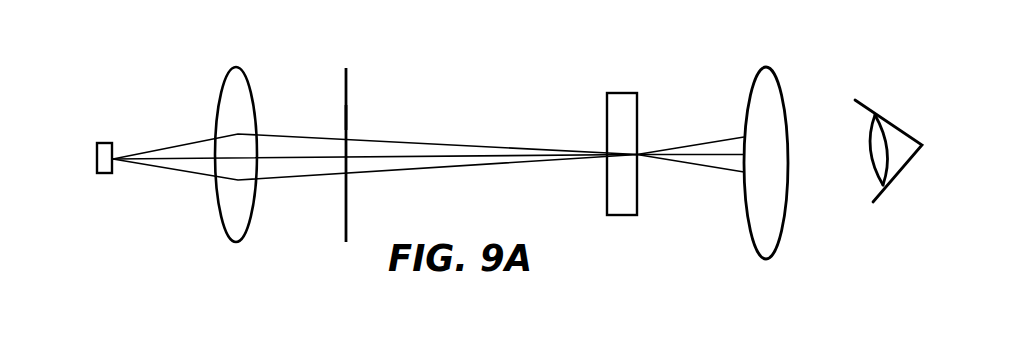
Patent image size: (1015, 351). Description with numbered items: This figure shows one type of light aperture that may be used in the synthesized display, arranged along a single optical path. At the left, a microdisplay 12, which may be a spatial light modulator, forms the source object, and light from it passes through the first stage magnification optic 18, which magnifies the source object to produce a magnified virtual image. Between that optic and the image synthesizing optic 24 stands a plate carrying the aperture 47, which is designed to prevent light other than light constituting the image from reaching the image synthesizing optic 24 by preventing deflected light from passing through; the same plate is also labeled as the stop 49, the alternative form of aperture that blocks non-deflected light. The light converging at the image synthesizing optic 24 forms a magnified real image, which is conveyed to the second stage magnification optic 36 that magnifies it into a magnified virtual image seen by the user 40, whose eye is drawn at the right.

The microdisplay 12 is at (87, 136).
The first stage magnification optic 18 is at (250, 136).
The stop 49 is at (377, 138).
The aperture 47 is at (386, 109).
The image synthesizing optic 24 is at (604, 129).
The second stage magnification optic 36 is at (745, 146).
The user 40 is at (911, 139).